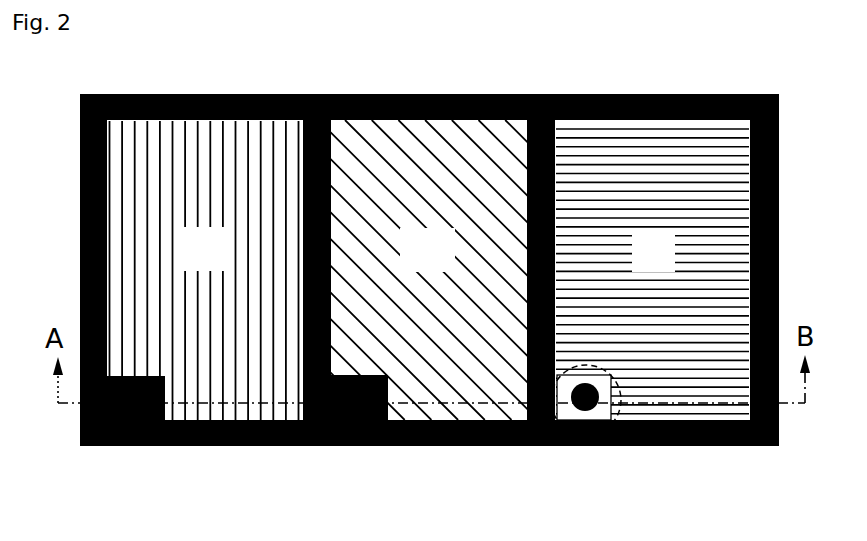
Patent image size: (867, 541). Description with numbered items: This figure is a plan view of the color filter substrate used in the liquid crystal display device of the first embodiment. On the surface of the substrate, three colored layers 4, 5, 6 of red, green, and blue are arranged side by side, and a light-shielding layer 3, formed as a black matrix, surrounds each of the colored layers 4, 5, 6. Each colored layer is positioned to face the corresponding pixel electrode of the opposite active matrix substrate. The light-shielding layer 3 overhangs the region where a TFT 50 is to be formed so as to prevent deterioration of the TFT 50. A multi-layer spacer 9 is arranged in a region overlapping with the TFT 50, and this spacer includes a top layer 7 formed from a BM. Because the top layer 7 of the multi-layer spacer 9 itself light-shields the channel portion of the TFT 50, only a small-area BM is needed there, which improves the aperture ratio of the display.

The light-shielding layer 3 is at (779, 230).
The colored layer 4 is at (212, 136).
The colored layer 5 is at (435, 134).
The colored layer 6 is at (658, 137).
The top layer 7 is at (564, 446).
The multi-layer spacer 9 is at (606, 446).
The TFT 50 is at (623, 444).